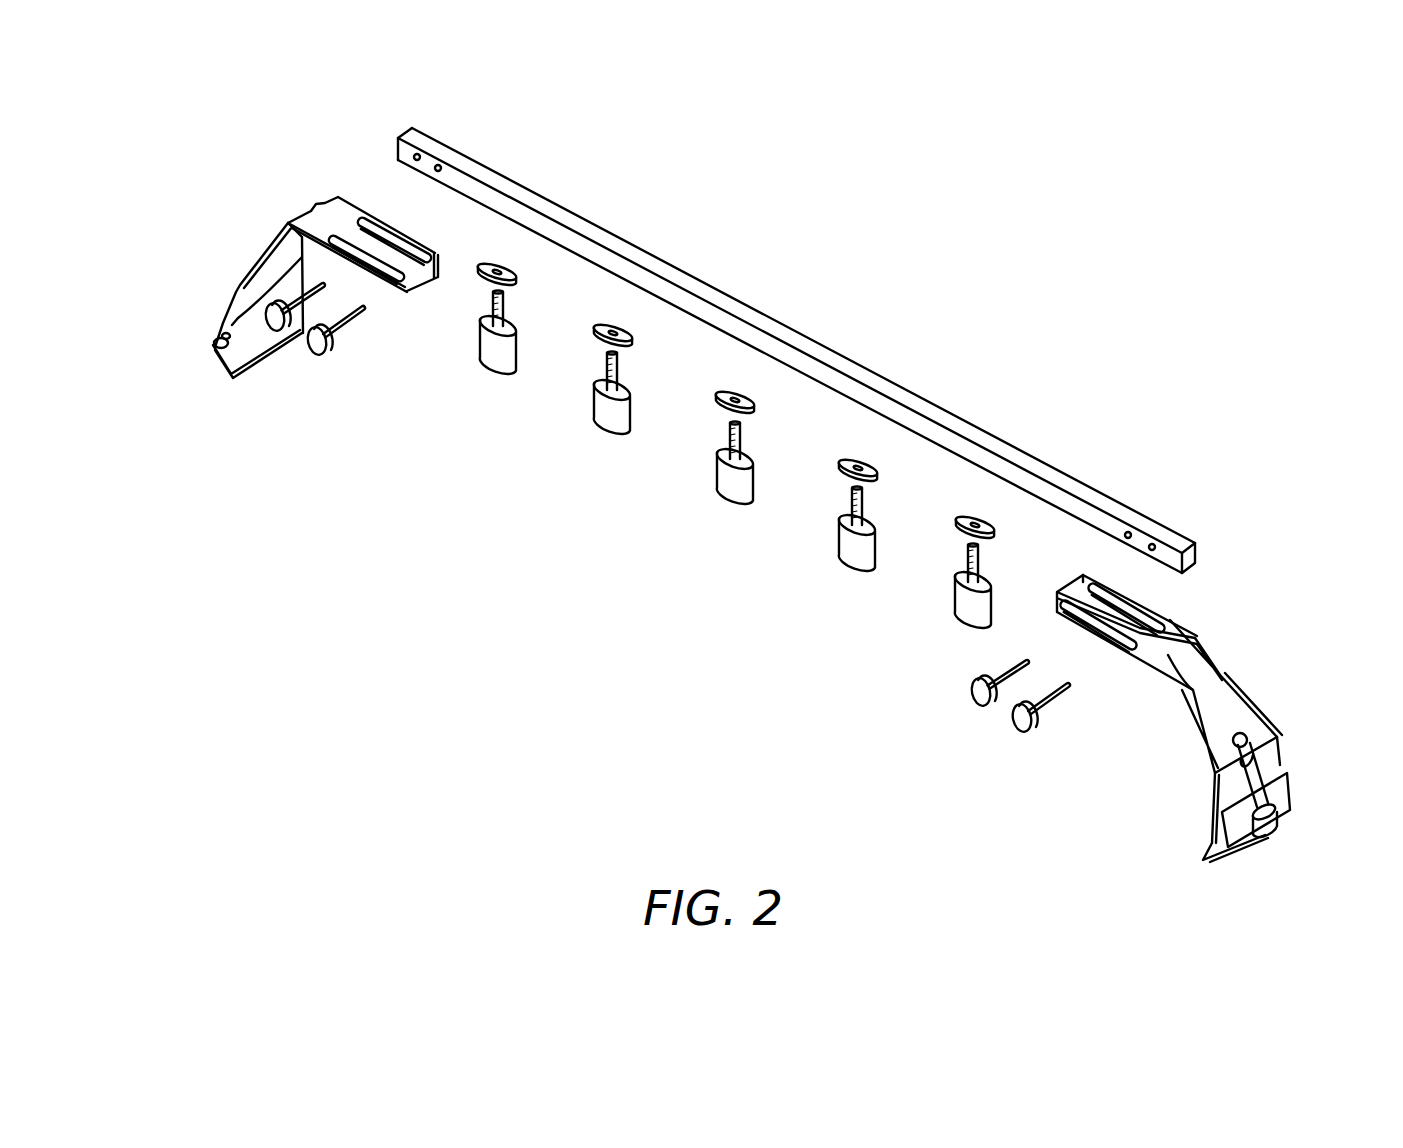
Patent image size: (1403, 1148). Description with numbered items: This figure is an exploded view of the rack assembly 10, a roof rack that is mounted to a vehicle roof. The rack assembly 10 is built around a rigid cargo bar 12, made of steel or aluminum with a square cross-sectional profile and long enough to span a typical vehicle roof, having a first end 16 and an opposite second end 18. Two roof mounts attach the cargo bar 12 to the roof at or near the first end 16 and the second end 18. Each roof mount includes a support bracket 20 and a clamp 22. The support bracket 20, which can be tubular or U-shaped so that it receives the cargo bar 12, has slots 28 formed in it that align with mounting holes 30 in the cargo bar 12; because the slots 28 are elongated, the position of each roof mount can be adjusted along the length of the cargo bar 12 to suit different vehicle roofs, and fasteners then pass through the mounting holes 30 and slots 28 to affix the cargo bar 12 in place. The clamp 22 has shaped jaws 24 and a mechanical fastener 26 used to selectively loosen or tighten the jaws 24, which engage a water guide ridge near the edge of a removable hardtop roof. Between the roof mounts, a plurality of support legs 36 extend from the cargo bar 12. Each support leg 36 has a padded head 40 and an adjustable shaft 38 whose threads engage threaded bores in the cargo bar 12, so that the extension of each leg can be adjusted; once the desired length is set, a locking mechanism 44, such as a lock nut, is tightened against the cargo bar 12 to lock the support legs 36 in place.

The rack assembly 10 is at (1037, 380).
The cargo bar 12 is at (1082, 483).
The first end 16 is at (395, 140).
The second end 18 is at (1200, 559).
The support bracket 20 is at (1202, 633).
The clamp 22 is at (1300, 810).
The jaws 24 is at (1208, 856).
The mechanical fastener 26 is at (1270, 821).
The slots 28 is at (1115, 636).
The mounting holes 30 is at (1135, 533).
The support legs 36 is at (748, 485).
The adjustable shaft 38 is at (607, 364).
The padded head 40 is at (605, 413).
The locking mechanism 44 is at (723, 398).